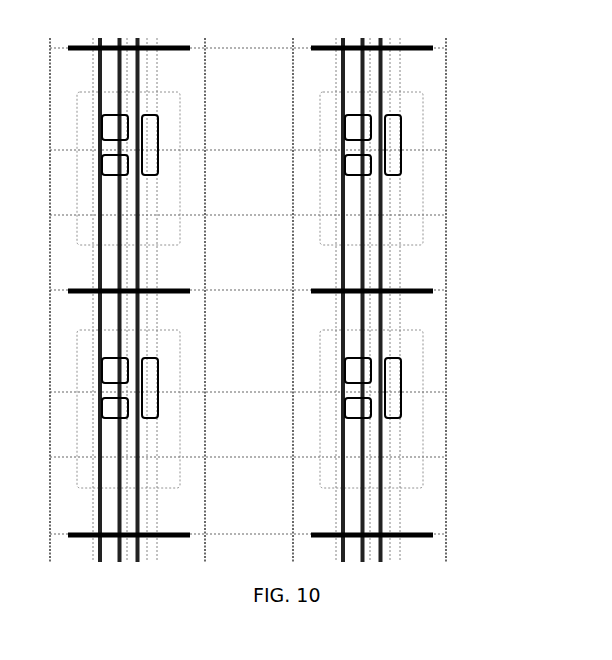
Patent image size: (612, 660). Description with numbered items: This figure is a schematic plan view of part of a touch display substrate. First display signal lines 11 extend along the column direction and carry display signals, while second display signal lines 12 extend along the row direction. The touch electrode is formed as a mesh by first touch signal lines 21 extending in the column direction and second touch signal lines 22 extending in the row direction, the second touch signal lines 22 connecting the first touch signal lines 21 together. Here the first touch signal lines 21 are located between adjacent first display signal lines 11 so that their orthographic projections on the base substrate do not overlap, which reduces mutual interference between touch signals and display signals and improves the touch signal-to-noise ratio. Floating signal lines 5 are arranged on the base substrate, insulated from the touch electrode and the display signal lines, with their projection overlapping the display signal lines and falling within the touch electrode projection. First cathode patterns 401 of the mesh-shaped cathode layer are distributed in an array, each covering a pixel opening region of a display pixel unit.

The floating signal line 5 is at (432, 290).
The first display signal line 11 is at (383, 262).
The second display signal line 12 is at (403, 73).
The first touch signal line 21 is at (446, 187).
The second touch signal line 22 is at (258, 290).
The first cathode pattern 401 is at (415, 430).